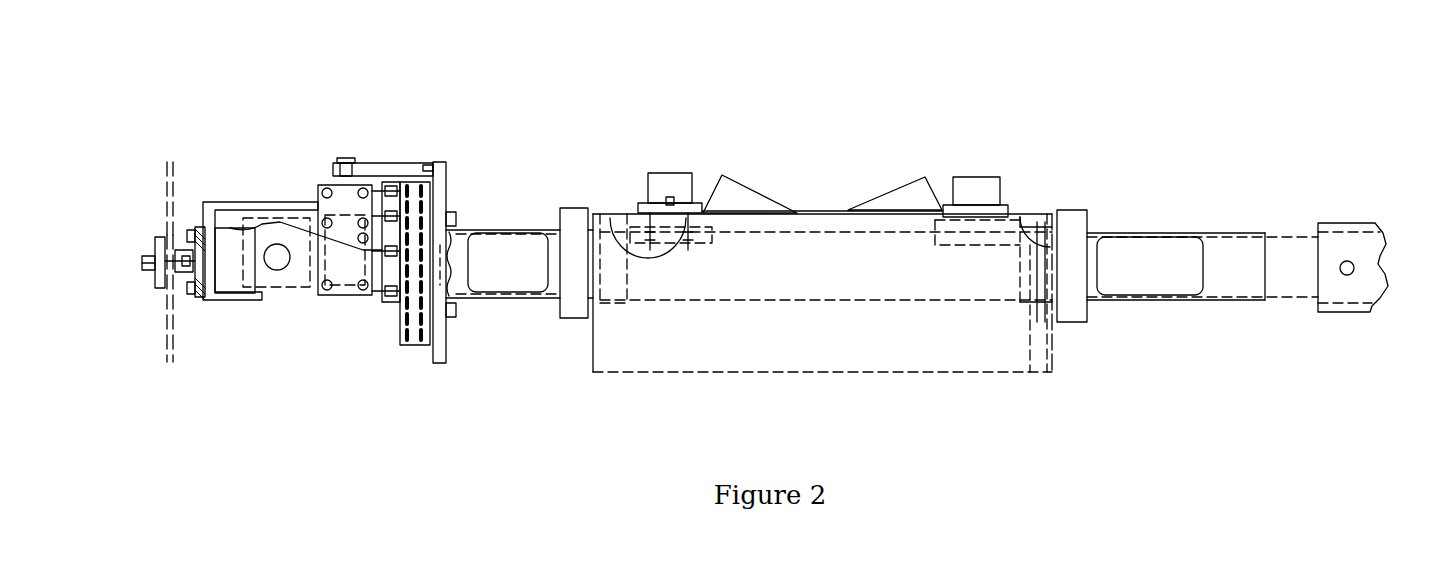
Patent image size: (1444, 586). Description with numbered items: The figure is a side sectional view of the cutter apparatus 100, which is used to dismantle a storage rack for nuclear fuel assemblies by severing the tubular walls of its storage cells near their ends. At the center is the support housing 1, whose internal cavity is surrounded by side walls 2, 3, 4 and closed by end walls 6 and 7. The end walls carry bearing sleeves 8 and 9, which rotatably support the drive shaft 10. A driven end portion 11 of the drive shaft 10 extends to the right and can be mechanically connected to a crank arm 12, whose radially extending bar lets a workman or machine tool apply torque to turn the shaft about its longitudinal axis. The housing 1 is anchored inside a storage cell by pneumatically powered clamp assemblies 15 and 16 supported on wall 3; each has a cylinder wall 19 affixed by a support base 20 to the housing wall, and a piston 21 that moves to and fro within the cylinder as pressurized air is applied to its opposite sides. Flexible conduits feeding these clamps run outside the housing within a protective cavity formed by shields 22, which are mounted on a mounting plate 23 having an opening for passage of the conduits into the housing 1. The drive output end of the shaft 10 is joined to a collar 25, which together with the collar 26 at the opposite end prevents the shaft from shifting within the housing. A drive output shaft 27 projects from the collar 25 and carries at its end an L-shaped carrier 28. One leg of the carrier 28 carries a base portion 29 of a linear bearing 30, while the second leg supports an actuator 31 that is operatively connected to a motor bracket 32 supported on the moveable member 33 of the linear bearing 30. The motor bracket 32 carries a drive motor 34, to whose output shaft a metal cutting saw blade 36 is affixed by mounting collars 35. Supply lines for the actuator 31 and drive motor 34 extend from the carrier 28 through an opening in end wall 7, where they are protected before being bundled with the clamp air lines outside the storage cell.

The support housing 1 is at (822, 319).
The side wall 2 is at (1009, 210).
The side wall 3 is at (910, 317).
The side wall 4 is at (822, 395).
The end wall 6 is at (1089, 328).
The end wall 7 is at (553, 307).
The bearing sleeve 8 is at (1058, 235).
The bearing sleeve 9 is at (575, 292).
The drive shaft 10 is at (826, 321).
The driven end portion 11 is at (1176, 240).
The crank arm 12 is at (1377, 246).
The pneumatically powered clamp assembly 15 is at (692, 144).
The pneumatically powered clamp assembly 16 is at (962, 172).
The cylinder wall 19 is at (614, 145).
The support base 20 is at (613, 185).
The piston 21 is at (620, 128).
The shield 22 is at (822, 153).
The mounting plate 23 is at (822, 133).
The collar 25 is at (1123, 291).
The collar 26 is at (552, 240).
The drive output shaft 27 is at (503, 167).
The L-shaped carrier 28 is at (394, 231).
The base portion 29 is at (457, 310).
The linear bearing 30 is at (382, 295).
The actuator 31 is at (296, 276).
The motor bracket 32 is at (292, 225).
The moveable member 33 is at (322, 287).
The drive motor 34 is at (248, 282).
The mounting collar 35 is at (169, 249).
The metal cutting saw blade 36 is at (118, 185).
The cutter apparatus 100 is at (1213, 300).